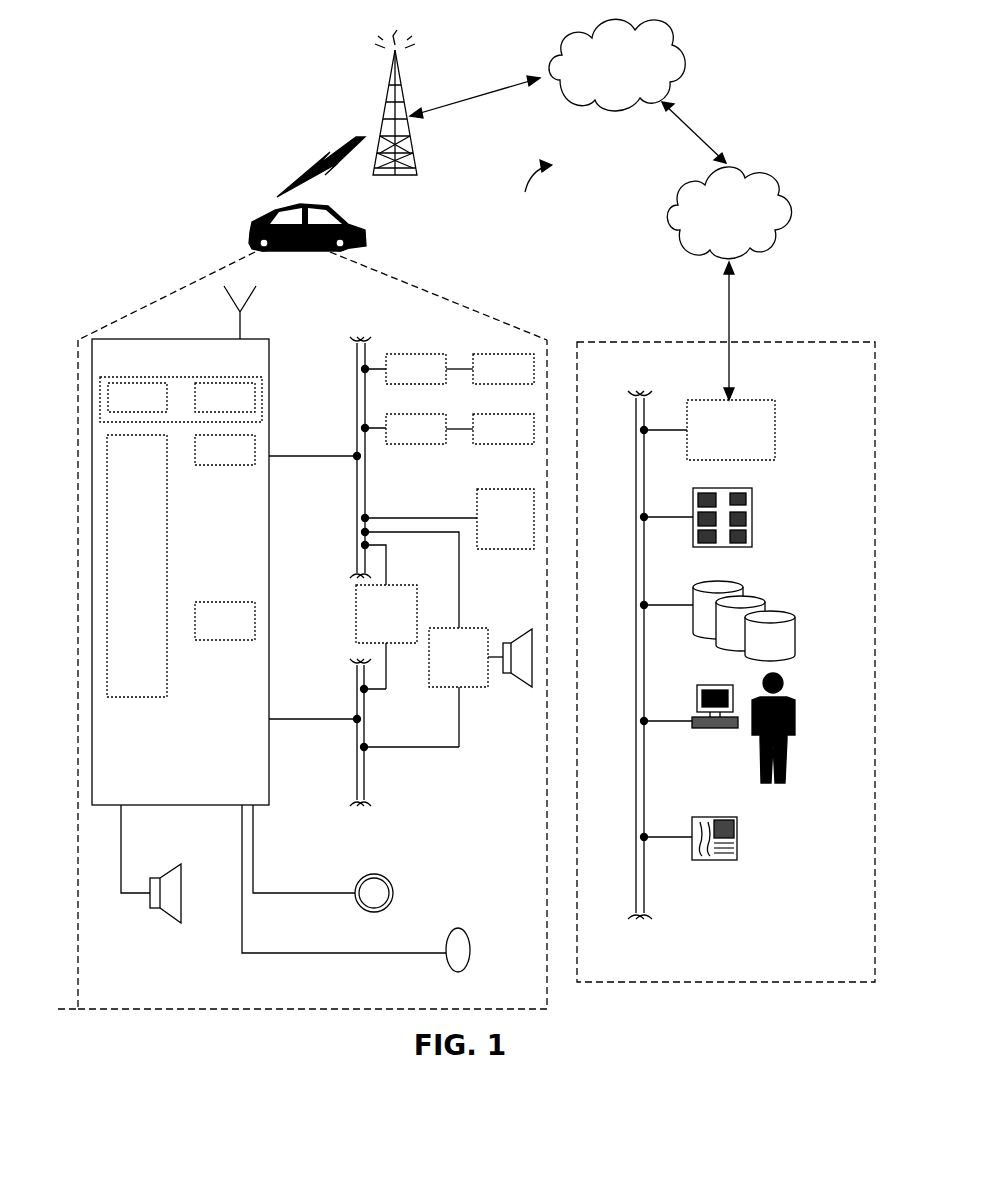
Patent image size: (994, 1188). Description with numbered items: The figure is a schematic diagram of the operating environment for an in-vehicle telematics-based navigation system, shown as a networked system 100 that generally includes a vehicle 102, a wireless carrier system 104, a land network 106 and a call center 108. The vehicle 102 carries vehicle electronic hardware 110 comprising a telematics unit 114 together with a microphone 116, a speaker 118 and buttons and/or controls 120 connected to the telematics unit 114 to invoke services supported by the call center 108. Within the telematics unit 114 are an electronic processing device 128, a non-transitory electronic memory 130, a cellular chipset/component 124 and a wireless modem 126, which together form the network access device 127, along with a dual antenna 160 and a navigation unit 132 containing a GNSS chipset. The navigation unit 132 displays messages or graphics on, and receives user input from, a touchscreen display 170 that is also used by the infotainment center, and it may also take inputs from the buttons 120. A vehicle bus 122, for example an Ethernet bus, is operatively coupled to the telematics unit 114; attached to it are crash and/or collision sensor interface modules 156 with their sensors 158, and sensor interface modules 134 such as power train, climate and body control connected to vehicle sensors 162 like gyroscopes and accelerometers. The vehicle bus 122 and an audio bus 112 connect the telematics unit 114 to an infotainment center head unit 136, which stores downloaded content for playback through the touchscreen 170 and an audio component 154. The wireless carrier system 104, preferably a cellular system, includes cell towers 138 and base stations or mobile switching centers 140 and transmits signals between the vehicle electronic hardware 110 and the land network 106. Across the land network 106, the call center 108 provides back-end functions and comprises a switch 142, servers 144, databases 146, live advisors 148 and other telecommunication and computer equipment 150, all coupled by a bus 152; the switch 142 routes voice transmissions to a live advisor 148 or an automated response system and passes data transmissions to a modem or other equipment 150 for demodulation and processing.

The networked system 100 is at (312, 193).
The vehicle 102 is at (256, 222).
The wireless carrier system 104 is at (481, 149).
The land network 106 is at (727, 180).
The call center 108 is at (726, 662).
The vehicle electronic hardware 110 is at (548, 990).
The audio bus 112 is at (357, 768).
The telematics unit 114 is at (180, 572).
The microphone 116 is at (462, 928).
The speaker 118 is at (168, 913).
The buttons and/or controls 120 is at (374, 874).
The vehicle bus 122 is at (368, 500).
The cellular chipset/component 124 is at (137, 397).
The wireless modem 126 is at (225, 397).
The network access device 127 is at (130, 377).
The electronic processing device 128 is at (137, 566).
The non-transitory electronic memory 130 is at (225, 621).
The navigation unit 132 is at (225, 450).
The sensor interface modules 134 is at (416, 429).
The infotainment center head unit 136 is at (386, 637).
The cell tower 138 is at (404, 74).
The mobile switching center 140 is at (617, 65).
The switch 142 is at (731, 361).
The server 144 is at (753, 510).
The database 146 is at (795, 622).
The live advisor 148 is at (788, 700).
The telecommunication and computer equipment 150 is at (738, 832).
The bus 152 is at (636, 660).
The audio component 154 is at (480, 687).
The crash and/or collision sensor interface modules 156 is at (416, 369).
The sensors 158 is at (490, 369).
The dual antenna 160 is at (248, 332).
The vehicle sensors 162 is at (490, 429).
The touchscreen display 170 is at (505, 519).